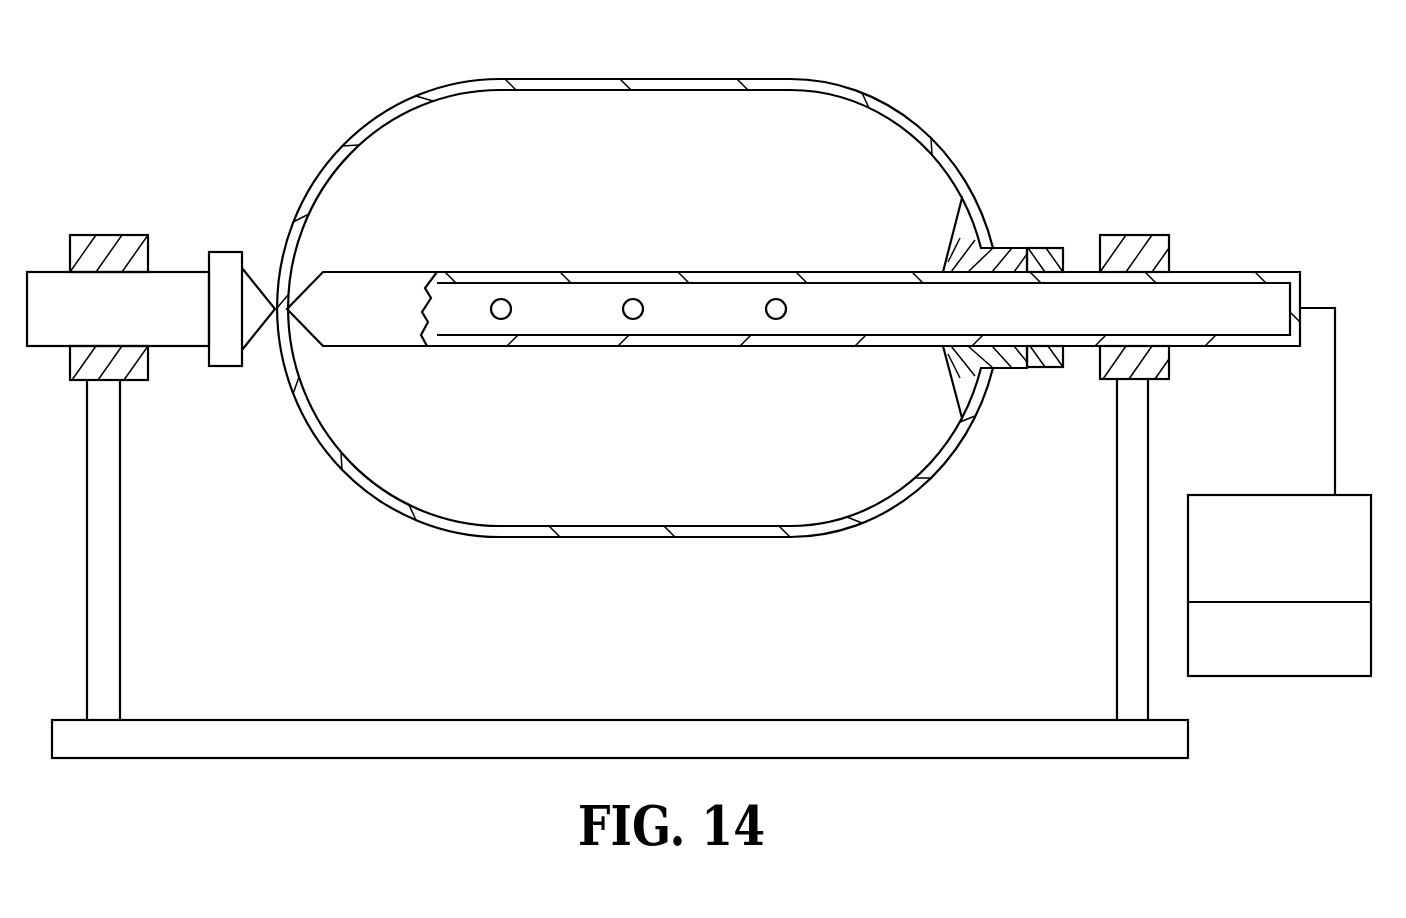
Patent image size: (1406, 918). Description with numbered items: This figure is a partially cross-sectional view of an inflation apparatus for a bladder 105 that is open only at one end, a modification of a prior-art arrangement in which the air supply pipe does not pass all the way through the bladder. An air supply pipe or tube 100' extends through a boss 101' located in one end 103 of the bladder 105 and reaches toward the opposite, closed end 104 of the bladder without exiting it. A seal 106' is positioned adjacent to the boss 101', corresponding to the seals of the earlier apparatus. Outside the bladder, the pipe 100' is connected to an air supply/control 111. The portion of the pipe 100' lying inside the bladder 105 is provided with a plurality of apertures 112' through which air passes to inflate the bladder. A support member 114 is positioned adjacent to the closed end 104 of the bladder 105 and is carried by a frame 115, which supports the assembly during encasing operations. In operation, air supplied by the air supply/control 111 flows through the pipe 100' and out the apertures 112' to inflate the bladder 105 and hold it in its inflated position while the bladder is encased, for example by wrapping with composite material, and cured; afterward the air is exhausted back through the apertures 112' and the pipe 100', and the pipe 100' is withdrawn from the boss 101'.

The air supply pipe 100' is at (793, 275).
The boss 101' is at (935, 299).
The end of bladder 103 is at (938, 148).
The opposite end of bladder 104 is at (334, 160).
The bladder 105 is at (677, 80).
The seal 106' is at (1063, 257).
The air supply/control 111 is at (1243, 495).
The apertures 112' is at (638, 300).
The support member 114 is at (181, 271).
The frame 115 is at (1117, 612).